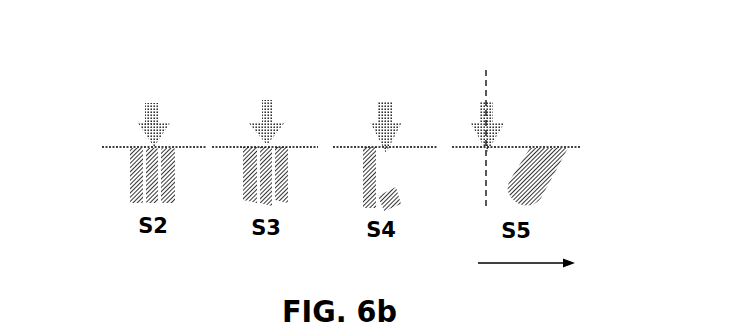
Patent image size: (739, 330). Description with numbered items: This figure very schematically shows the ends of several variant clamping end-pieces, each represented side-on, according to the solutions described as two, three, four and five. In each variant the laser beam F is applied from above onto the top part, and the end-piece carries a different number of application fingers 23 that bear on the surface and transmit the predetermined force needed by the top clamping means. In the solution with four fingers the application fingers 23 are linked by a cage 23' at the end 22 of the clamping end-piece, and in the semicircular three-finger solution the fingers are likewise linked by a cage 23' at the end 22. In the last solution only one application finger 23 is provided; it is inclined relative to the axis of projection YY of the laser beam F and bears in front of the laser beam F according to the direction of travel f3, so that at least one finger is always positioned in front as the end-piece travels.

The application finger 23 is at (317, 145).
The cage 23' is at (358, 197).
The end of the clamping end-piece 22 is at (236, 197).
The laser beam F is at (150, 123).
The axis of projection YY is at (487, 92).
The direction of travel f3 is at (528, 248).